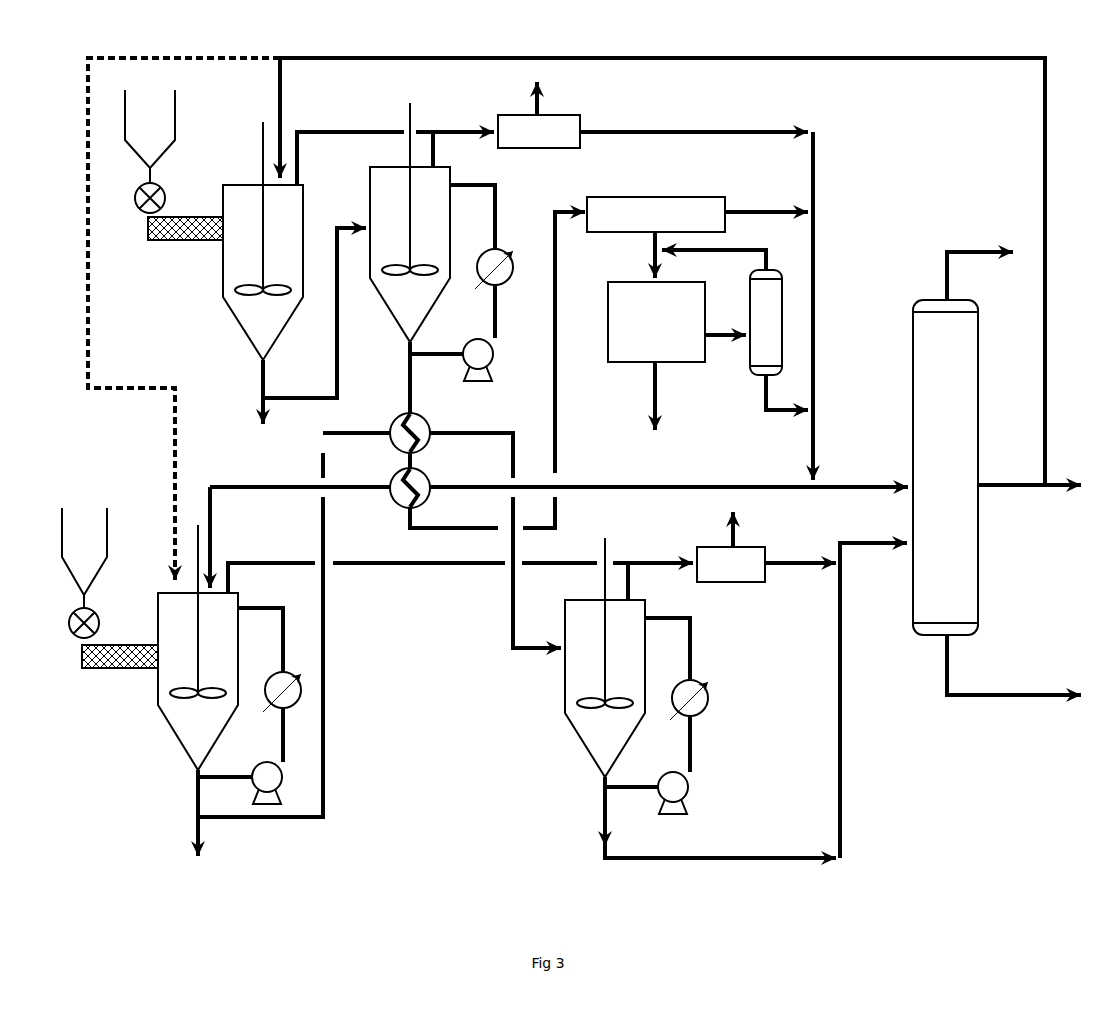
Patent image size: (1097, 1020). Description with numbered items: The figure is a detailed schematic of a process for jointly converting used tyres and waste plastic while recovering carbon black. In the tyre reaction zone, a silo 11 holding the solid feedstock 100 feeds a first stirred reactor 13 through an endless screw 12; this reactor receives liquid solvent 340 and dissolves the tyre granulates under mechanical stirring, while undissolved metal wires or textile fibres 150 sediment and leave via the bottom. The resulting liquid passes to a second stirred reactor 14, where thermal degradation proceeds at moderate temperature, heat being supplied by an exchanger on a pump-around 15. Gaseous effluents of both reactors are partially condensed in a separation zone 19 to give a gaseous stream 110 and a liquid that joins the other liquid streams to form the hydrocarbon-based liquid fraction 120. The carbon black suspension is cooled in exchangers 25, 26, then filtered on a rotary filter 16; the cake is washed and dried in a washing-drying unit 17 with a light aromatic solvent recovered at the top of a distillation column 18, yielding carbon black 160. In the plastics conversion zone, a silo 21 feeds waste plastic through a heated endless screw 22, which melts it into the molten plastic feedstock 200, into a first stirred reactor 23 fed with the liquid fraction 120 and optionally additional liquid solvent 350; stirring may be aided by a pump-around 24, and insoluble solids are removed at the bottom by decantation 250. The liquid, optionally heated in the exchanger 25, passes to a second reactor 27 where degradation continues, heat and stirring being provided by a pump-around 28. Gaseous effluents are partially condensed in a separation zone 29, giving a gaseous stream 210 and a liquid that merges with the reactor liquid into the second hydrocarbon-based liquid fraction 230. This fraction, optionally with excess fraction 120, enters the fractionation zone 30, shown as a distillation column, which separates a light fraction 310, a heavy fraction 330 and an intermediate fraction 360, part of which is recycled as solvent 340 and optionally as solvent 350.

The silo 11 is at (150, 151).
The endless screw 12 is at (185, 238).
The first stirred reactor 13 is at (263, 241).
The second stirred reactor 14 is at (410, 222).
The pump-around 15 is at (470, 283).
The rotary filter 16 is at (697, 237).
The washing-drying unit 17 is at (677, 322).
The distillation column 18 is at (735, 330).
The separation zone 19 is at (539, 131).
The silo 21 is at (84, 573).
The endless screw 22 is at (120, 666).
The first stirred reactor 23 is at (198, 647).
The pump-around 24 is at (249, 706).
The exchanger 25 is at (418, 441).
The exchanger 26 is at (472, 494).
The second reactor 27 is at (605, 657).
The pump-around 28 is at (656, 716).
The separation zone 29 is at (766, 564).
The fractionation zone 30 is at (945, 467).
The solid feedstock 100 is at (152, 168).
The gaseous stream 110 is at (542, 105).
The hydrocarbon-based liquid fraction 120 is at (815, 450).
The metal wires or textile fibres 150 is at (262, 410).
The carbon black 160 is at (660, 403).
The molten plastic feedstock 200 is at (86, 595).
The gaseous stream 210 is at (738, 535).
The second hydrocarbon-based liquid fraction 230 is at (866, 547).
The decantation 250 is at (192, 838).
The light fraction 310 is at (955, 250).
The heavy fraction 330 is at (1045, 690).
The liquid solvent 340 is at (283, 110).
The additional liquid solvent 350 is at (120, 398).
The intermediate fraction 360 is at (992, 483).